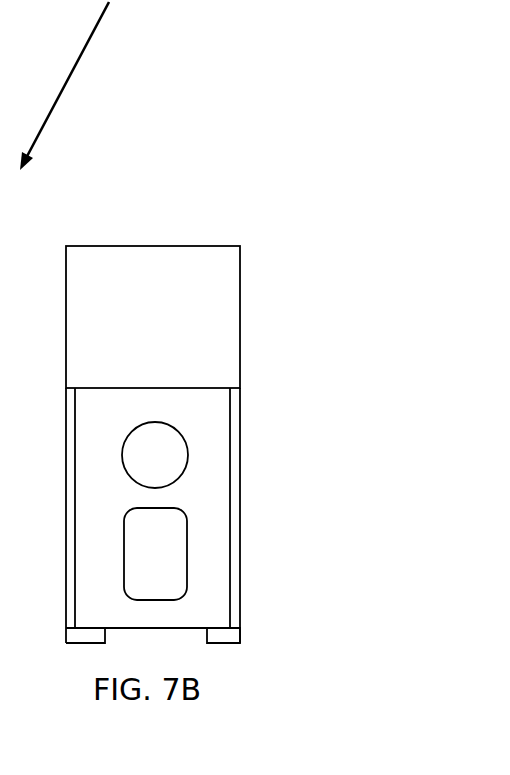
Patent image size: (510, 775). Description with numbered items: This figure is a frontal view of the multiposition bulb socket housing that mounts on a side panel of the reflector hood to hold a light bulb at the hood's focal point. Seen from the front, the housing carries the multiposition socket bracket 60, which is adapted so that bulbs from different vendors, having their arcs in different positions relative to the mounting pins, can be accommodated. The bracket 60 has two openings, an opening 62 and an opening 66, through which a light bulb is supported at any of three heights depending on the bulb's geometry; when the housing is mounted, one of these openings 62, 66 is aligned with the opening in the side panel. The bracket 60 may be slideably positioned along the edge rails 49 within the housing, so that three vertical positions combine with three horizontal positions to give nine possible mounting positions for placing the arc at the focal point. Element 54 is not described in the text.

The upper housing portion 54 is at (178, 267).
The multiposition socket bracket 60 is at (190, 507).
The opening 62 is at (168, 442).
The opening 66 is at (170, 578).
The edge rails 49 is at (220, 637).